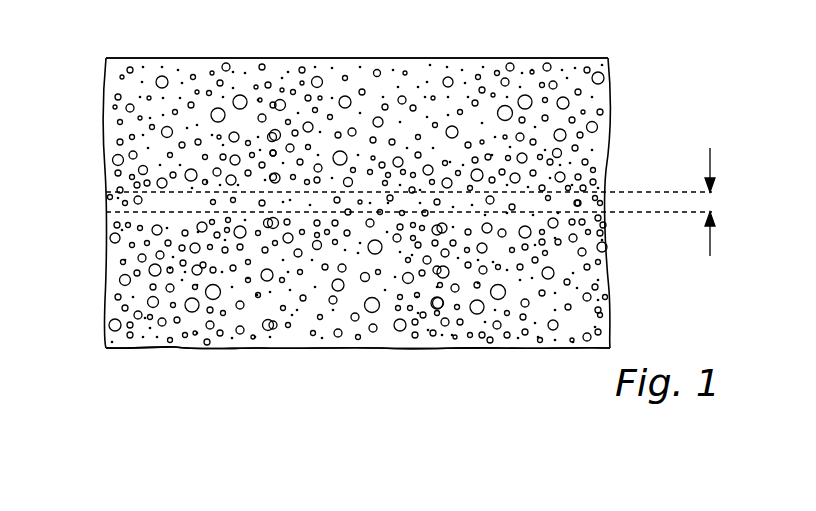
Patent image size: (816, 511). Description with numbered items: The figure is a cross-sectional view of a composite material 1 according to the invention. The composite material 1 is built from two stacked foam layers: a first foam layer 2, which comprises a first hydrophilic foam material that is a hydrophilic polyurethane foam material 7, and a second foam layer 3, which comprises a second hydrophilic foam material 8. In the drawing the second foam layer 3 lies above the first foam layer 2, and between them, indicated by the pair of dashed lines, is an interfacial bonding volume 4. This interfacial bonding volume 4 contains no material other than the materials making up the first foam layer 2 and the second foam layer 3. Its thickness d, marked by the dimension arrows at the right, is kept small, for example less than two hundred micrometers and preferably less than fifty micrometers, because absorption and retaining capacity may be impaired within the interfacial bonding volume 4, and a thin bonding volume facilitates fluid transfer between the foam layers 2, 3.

The composite material 1 is at (384, 202).
The first foam layer 2 is at (647, 192).
The second foam layer 3 is at (622, 58).
The interfacial bonding volume 4 is at (106, 203).
The hydrophilic polyurethane foam material 7 is at (237, 317).
The second hydrophilic foam material 8 is at (228, 64).